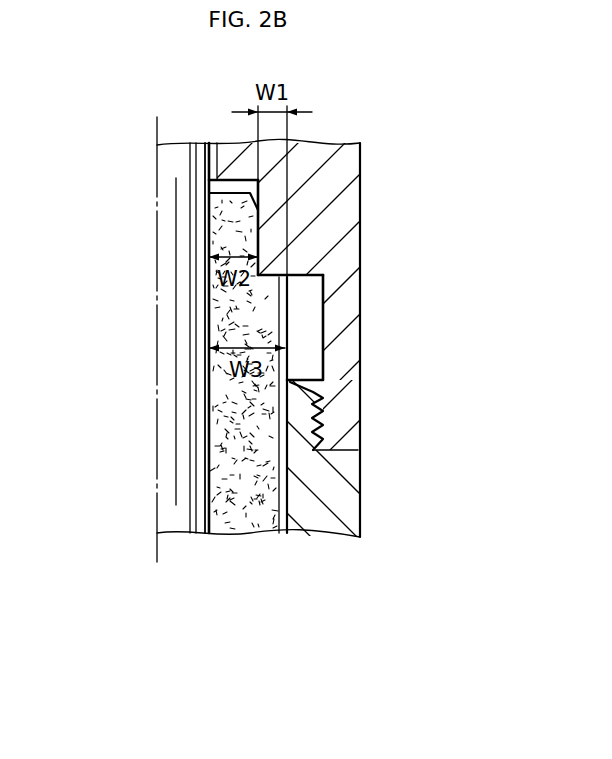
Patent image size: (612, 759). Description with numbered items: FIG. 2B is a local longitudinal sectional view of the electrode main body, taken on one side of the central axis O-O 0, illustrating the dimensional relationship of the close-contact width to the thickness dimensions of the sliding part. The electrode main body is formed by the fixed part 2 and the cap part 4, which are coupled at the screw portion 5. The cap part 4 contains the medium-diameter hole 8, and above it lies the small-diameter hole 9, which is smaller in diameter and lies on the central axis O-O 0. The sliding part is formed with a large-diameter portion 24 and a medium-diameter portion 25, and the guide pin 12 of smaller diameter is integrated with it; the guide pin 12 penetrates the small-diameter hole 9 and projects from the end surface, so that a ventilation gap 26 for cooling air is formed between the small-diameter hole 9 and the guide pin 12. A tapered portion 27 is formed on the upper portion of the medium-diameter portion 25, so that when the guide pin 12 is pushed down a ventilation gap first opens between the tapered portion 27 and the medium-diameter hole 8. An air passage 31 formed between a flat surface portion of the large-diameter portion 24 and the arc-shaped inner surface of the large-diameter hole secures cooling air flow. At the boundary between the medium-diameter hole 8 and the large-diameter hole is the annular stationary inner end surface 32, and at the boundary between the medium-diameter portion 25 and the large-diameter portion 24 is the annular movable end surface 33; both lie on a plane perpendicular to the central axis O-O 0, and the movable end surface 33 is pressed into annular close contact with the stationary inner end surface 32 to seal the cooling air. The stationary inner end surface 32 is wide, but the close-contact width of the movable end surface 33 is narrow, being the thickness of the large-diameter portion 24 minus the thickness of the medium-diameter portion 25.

The central axis O-O 0 is at (156, 337).
The fixed part 2 is at (361, 505).
The cap part 4 is at (361, 152).
The screw portion 5 is at (325, 418).
The medium-diameter hole 8 is at (262, 237).
The small-diameter hole 9 is at (207, 152).
The guide pin 12 is at (211, 505).
The large-diameter portion 24 is at (234, 403).
The medium-diameter portion 25 is at (224, 228).
The ventilation gap 26 is at (213, 168).
The tapered portion 27 is at (262, 194).
The air passage 31 is at (283, 335).
The stationary inner end surface 32 is at (298, 279).
The movable end surface 33 is at (263, 270).